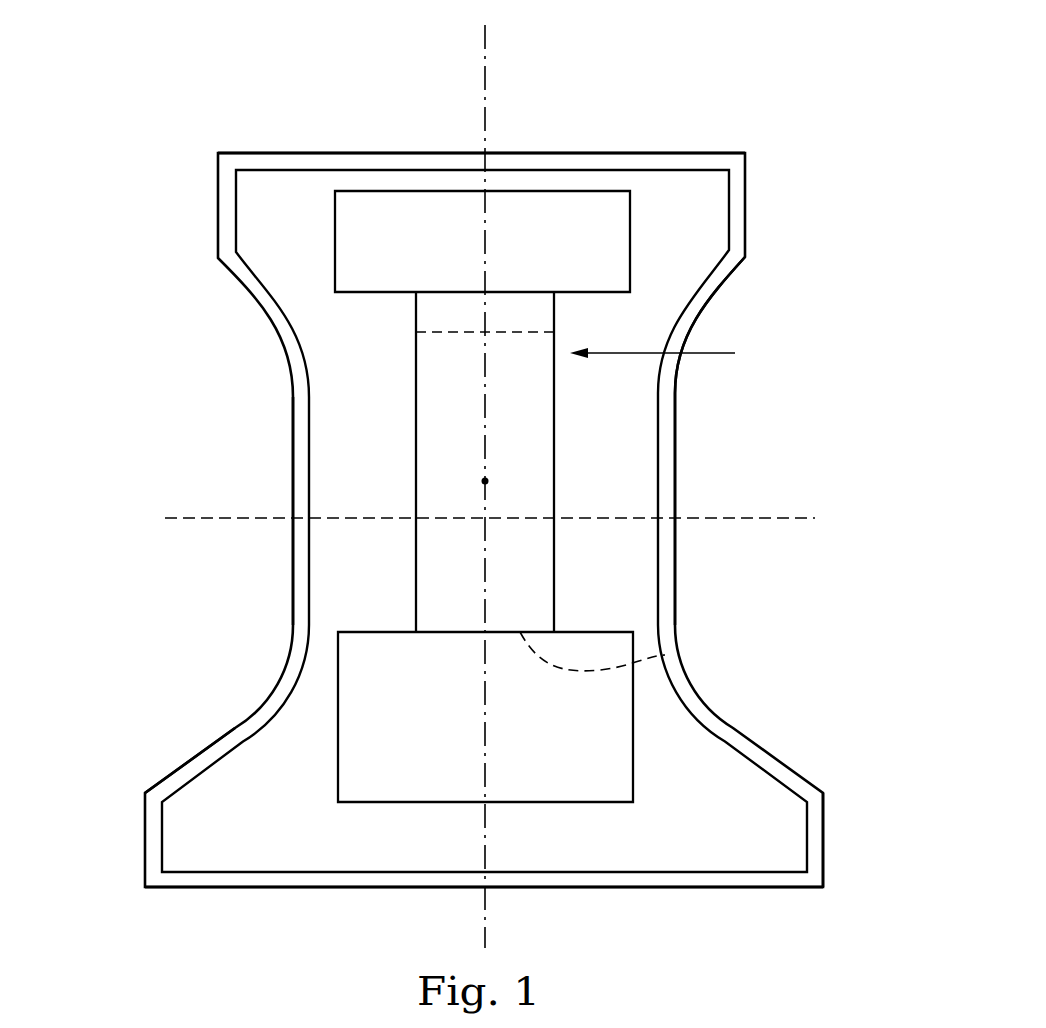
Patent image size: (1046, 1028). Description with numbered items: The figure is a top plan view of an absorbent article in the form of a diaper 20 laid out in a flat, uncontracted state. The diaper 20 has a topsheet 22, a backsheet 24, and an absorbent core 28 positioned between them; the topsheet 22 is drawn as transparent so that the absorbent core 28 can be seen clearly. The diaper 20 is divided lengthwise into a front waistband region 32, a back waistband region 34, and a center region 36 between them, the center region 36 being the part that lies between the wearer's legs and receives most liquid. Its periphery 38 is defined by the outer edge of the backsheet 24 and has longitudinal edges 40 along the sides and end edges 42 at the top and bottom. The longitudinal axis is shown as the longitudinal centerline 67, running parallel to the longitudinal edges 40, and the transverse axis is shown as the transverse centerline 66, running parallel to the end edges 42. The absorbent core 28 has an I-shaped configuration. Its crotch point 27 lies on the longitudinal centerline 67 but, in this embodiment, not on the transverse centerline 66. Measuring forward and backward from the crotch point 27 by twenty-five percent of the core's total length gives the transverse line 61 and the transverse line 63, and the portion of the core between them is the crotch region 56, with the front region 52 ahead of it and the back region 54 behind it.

The diaper 20 is at (194, 196).
The topsheet 22 is at (713, 205).
The backsheet 24 is at (737, 252).
The crotch point 27 is at (485, 481).
The absorbent core 28 is at (669, 355).
The front waistband region 32 is at (196, 233).
The back waistband region 34 is at (121, 857).
The center region 36 is at (268, 466).
The periphery 38 is at (824, 836).
The longitudinal edges 40 is at (145, 832).
The end edges 42 is at (722, 153).
The front region 52 is at (393, 202).
The back region 54 is at (367, 706).
The crotch region 56 is at (521, 426).
The transverse line 61 is at (416, 332).
The transverse line 63 is at (665, 655).
The transverse centerline 66 is at (735, 518).
The longitudinal centerline 67 is at (485, 55).